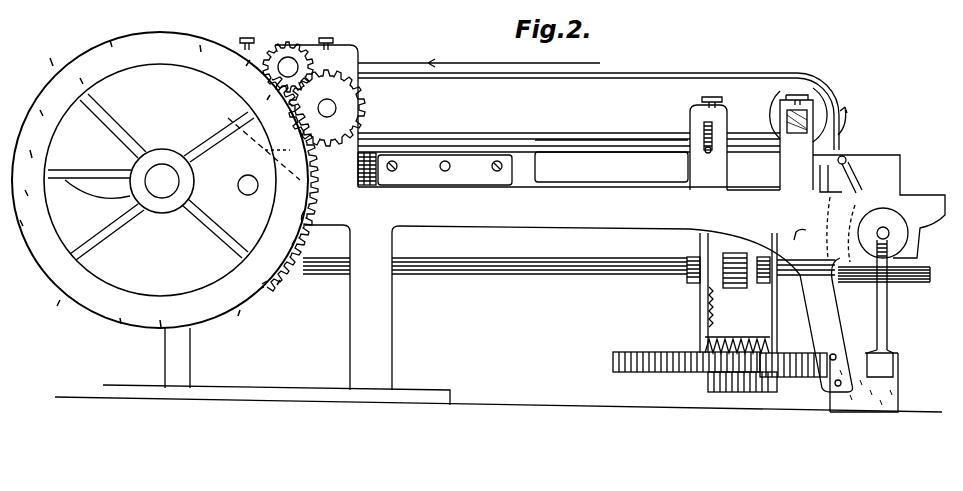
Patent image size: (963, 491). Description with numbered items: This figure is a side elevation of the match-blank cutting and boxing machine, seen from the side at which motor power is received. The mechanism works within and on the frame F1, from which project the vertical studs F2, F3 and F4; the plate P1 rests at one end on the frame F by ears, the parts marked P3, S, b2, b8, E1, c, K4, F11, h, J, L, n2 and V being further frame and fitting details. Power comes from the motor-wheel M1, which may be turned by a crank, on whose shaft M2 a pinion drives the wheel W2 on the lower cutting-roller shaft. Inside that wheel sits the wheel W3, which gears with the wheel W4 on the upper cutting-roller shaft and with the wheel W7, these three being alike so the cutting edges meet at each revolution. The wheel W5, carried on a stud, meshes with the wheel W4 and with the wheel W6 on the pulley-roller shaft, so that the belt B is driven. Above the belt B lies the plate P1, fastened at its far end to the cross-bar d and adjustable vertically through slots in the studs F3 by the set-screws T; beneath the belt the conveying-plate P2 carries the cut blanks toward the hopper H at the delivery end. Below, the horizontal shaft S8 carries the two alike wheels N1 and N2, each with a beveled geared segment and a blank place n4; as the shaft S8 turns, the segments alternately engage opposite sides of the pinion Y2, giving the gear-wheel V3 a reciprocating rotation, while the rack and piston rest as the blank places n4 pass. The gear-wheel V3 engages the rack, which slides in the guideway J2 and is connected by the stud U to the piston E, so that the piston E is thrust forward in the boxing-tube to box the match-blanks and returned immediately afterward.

The motor-wheel M1 is at (160, 180).
The motor-wheel shaft M2 is at (162, 181).
The bar P3 is at (164, 155).
The stud S is at (238, 186).
The gear-wheel W4 is at (228, 118).
The gear-wheel W3 is at (281, 140).
The gear-wheel W5 is at (288, 55).
The gear-wheel W6 is at (341, 108).
The gear-wheel W2 is at (306, 184).
The gear-wheel W7 is at (282, 287).
The vertical stud F2 is at (299, 112).
The frame F1 is at (278, 311).
The belt B is at (484, 143).
The slide bar b2 is at (445, 178).
The ratchet block b8 is at (364, 176).
The conveying-plate P2 is at (592, 165).
The plate P1 is at (611, 127).
The main frame E1 is at (576, 289).
The vertical stud F3 is at (708, 148).
The set-screw T is at (701, 97).
The slot c is at (703, 129).
The cross-bar d is at (754, 199).
The pulley K4 is at (785, 115).
The vertical stud F4 is at (813, 142).
The frame portion F11 is at (757, 205).
The hopper H is at (879, 206).
The pivot h is at (852, 174).
The bracket J is at (829, 178).
The horizontal shaft S8 is at (616, 259).
The segmentally-geared wheel N1 is at (689, 293).
The segmentally-geared wheel N2 is at (786, 293).
The blank place n4 is at (722, 268).
The collar L is at (735, 270).
The spring n2 is at (739, 311).
The pinion Y2 is at (737, 335).
The gear-wheel V3 is at (720, 362).
The frame F is at (838, 306).
The piston E is at (883, 233).
The cam V is at (851, 233).
The stud U is at (890, 301).
The guideway J2 is at (900, 360).